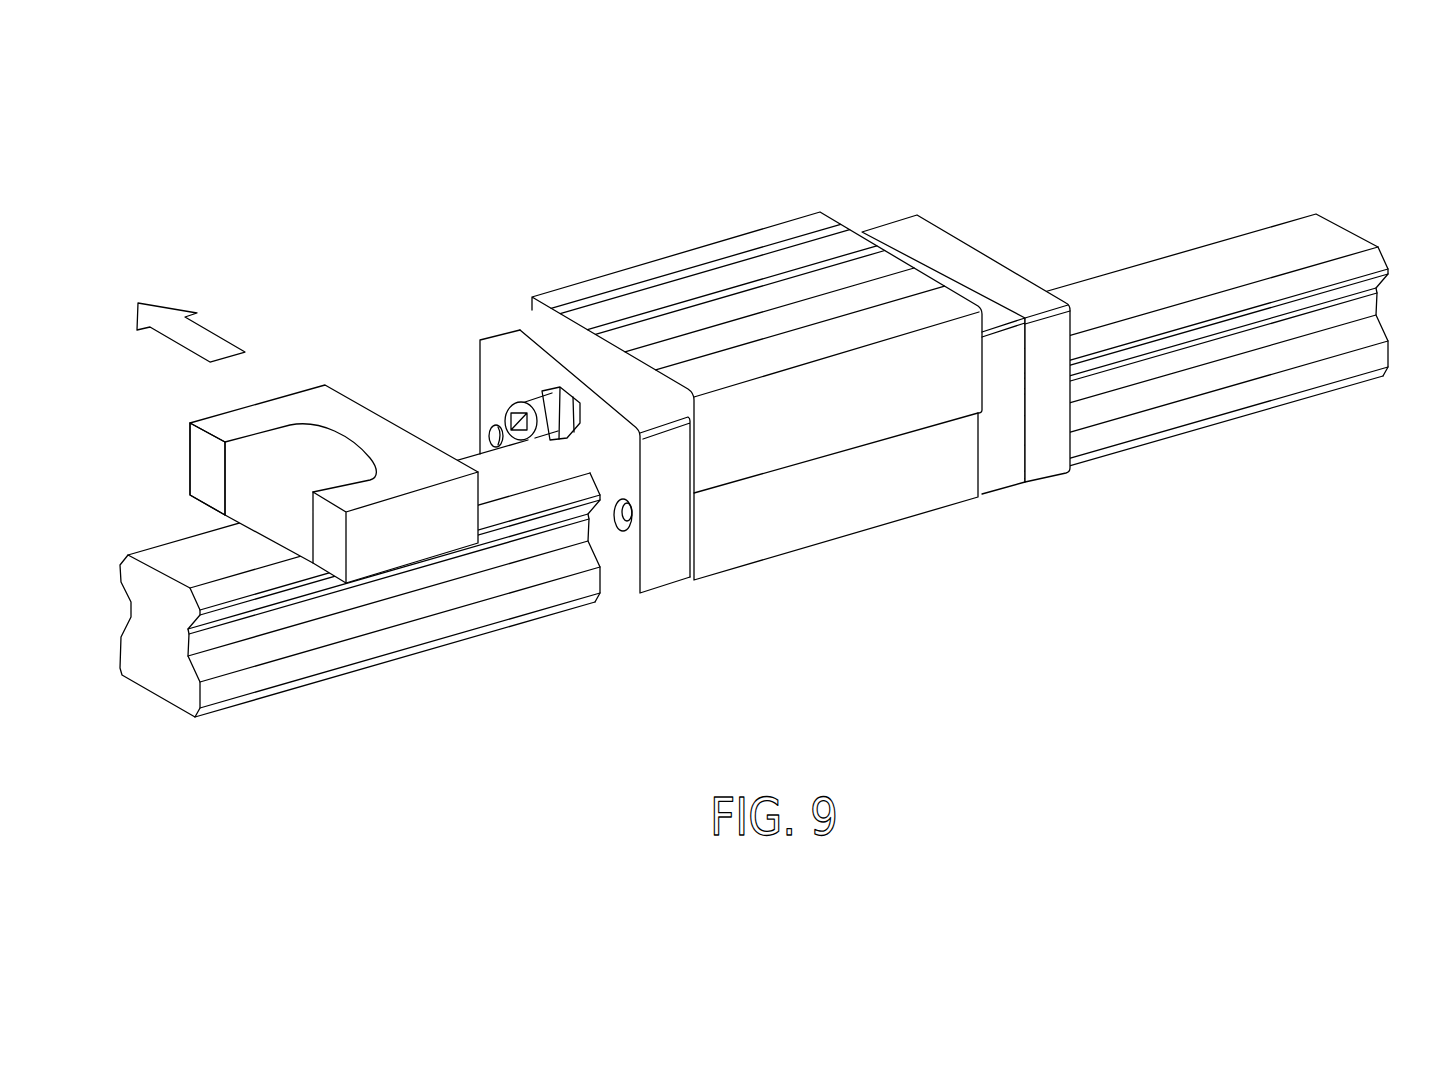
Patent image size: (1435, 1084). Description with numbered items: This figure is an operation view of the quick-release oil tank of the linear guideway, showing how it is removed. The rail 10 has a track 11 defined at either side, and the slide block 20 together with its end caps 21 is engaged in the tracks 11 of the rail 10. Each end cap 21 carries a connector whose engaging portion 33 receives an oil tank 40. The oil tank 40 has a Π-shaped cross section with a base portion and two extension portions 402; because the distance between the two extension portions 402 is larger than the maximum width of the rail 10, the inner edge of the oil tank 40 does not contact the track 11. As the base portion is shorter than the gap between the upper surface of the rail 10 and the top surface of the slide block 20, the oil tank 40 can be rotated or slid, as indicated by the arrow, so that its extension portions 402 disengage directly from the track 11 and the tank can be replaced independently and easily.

The rail 10 is at (1320, 238).
The track 11 is at (513, 528).
The slide block 20 is at (883, 265).
The end cap 21 is at (660, 562).
The engaging portion 33 is at (540, 407).
The oil tank 40 is at (1050, 349).
The extension portion 402 is at (222, 425).